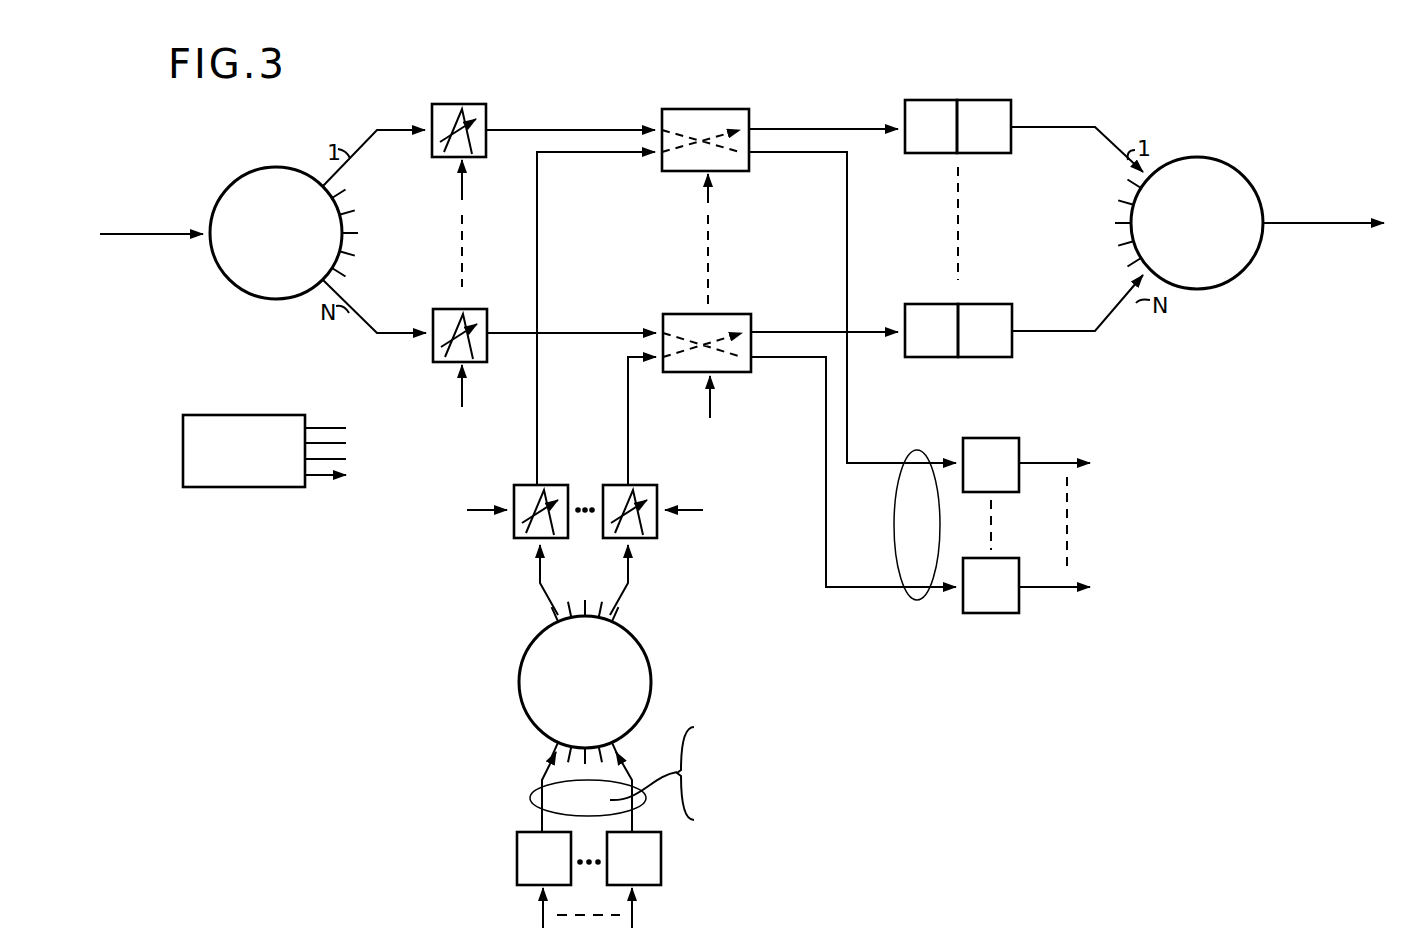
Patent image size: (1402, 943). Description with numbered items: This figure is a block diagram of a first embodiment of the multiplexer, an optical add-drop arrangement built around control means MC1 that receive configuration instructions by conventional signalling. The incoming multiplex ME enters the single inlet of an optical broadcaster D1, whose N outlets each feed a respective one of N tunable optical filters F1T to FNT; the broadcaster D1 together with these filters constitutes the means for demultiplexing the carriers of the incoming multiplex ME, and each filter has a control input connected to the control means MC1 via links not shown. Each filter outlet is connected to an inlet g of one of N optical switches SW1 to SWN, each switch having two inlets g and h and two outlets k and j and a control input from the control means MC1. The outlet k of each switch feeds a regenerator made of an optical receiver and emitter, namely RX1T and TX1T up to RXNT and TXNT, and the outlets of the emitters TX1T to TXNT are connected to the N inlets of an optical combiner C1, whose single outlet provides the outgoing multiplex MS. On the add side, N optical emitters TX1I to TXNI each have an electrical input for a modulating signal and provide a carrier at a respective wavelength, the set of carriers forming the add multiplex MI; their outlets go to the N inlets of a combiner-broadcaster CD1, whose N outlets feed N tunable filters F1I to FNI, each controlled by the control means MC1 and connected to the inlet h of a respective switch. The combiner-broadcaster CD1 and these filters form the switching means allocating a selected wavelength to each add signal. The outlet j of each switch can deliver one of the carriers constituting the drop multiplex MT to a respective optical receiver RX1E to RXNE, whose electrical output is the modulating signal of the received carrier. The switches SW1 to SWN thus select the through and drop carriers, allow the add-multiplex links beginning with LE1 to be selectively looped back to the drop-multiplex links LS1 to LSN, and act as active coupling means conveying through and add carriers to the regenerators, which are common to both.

The optical broadcaster D1 is at (280, 167).
The incoming multiplex ME is at (127, 262).
The outgoing multiplex MS is at (1315, 249).
The optical combiner C1 is at (1196, 158).
The combiner-broadcaster CD1 is at (520, 678).
The control means MC1 is at (235, 425).
The add multiplex MI is at (533, 793).
The drop multiplex MT is at (908, 600).
The link of the drop multiplex LS1 is at (848, 409).
The link of the drop multiplex LSN is at (826, 414).
The optical switch SW1 is at (693, 109).
The optical switch SWN is at (693, 314).
The tunable optical filter F1T is at (442, 112).
The tunable optical filter FNT is at (445, 316).
The tunable filter F1I is at (553, 490).
The tunable filter FNI is at (650, 490).
The optical receiver RX1T is at (927, 112).
The optical emitter TX1T is at (992, 112).
The optical receiver RXNT is at (925, 315).
The optical emitter TXNT is at (992, 315).
The optical receiver RX1E is at (988, 445).
The optical receiver RXNE is at (987, 607).
The optical emitter TX1I is at (523, 862).
The optical emitter TXNI is at (655, 862).
The link of the add multiplex LE1 is at (704, 775).